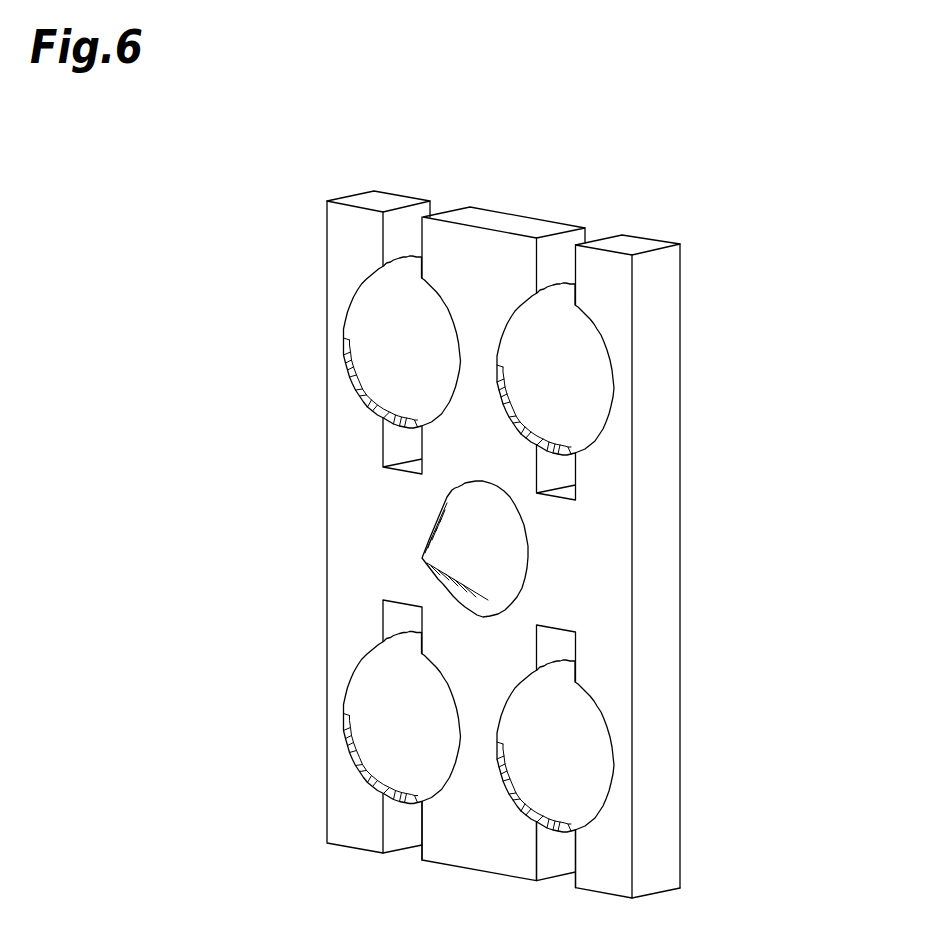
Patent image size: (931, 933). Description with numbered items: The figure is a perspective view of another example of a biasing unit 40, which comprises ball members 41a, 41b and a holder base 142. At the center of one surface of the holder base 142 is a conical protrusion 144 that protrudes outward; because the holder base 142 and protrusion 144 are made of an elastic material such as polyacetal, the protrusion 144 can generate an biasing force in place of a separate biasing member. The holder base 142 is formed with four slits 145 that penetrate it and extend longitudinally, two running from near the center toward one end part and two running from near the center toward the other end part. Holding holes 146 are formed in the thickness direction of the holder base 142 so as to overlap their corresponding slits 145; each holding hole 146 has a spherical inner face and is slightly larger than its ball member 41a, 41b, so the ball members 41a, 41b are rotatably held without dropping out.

The biasing unit 40 is at (697, 117).
The holder base 142 is at (665, 578).
The ball member 41a is at (593, 378).
The ball member 41b is at (367, 313).
The conical protrusion 144 is at (506, 529).
The slit 145 is at (380, 442).
The holding hole 146 is at (448, 310).